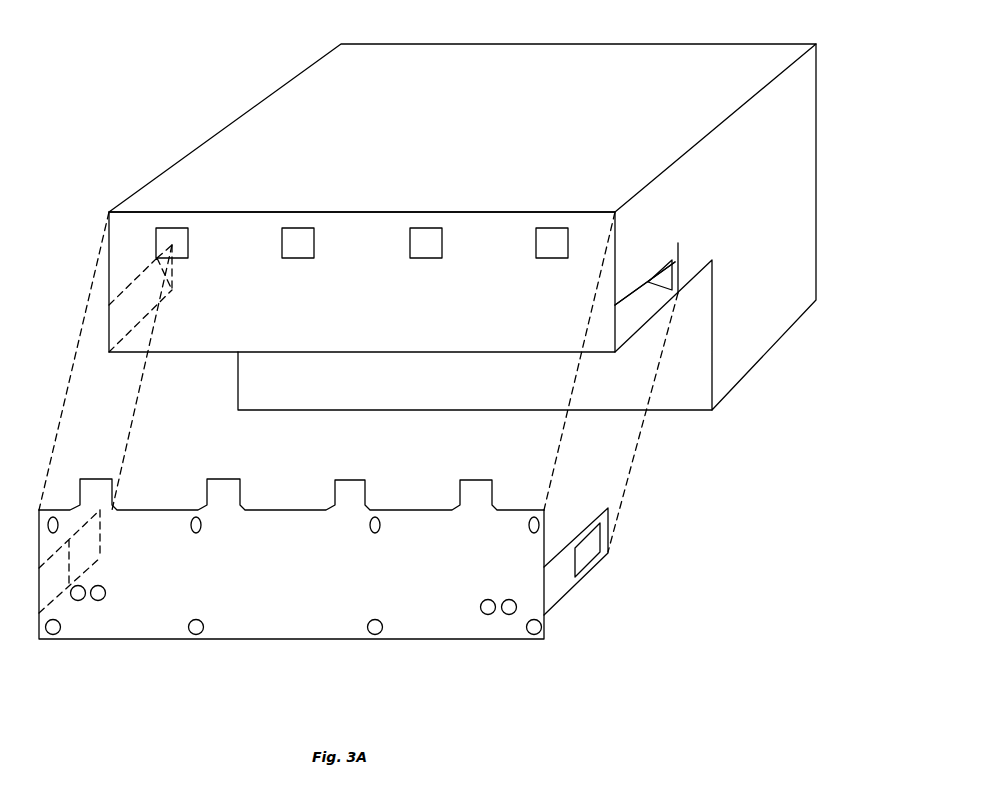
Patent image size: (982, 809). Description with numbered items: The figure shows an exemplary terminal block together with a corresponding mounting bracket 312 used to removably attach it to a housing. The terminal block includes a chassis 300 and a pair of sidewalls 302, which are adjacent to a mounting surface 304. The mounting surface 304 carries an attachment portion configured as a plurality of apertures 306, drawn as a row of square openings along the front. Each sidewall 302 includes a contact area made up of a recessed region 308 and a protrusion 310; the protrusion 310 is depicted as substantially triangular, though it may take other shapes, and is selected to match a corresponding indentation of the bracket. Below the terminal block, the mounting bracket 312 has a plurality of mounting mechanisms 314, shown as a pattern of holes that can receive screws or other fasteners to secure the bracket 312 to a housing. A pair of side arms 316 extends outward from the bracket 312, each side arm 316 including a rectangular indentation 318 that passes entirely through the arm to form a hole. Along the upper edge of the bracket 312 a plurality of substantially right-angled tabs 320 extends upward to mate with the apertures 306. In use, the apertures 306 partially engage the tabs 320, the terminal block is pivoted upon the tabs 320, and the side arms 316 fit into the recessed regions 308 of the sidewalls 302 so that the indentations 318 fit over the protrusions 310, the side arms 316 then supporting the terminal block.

The chassis 300 is at (598, 38).
The sidewalls 302 is at (780, 170).
The mounting surface 304 is at (375, 289).
The apertures 306 is at (546, 236).
The recessed region 308 is at (681, 238).
The protrusion 310 is at (679, 266).
The mounting bracket 312 is at (509, 642).
The mounting mechanisms 314 is at (206, 635).
The side arms 316 is at (570, 597).
The indentation 318 is at (602, 552).
The right-angled tabs 320 is at (355, 476).